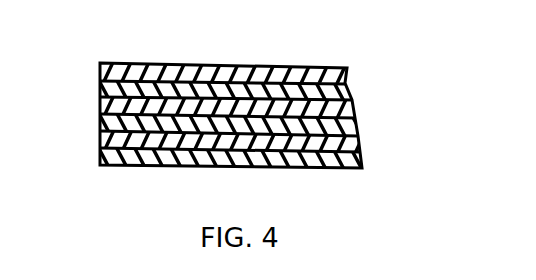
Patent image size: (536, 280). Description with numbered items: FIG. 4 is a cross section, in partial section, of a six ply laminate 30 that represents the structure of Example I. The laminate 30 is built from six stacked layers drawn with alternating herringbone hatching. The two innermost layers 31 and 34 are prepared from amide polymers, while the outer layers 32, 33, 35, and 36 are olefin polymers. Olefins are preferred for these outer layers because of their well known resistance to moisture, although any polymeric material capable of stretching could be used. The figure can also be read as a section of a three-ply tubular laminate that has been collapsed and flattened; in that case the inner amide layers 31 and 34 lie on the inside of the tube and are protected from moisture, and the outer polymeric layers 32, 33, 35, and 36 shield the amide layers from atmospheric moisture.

The six ply laminate 30 is at (394, 57).
The innermost amide layer 31 is at (359, 123).
The outer olefin layer 32 is at (100, 65).
The outer olefin layer 33 is at (100, 81).
The innermost amide layer 34 is at (100, 101).
The outer olefin layer 35 is at (100, 140).
The outer olefin layer 36 is at (100, 156).